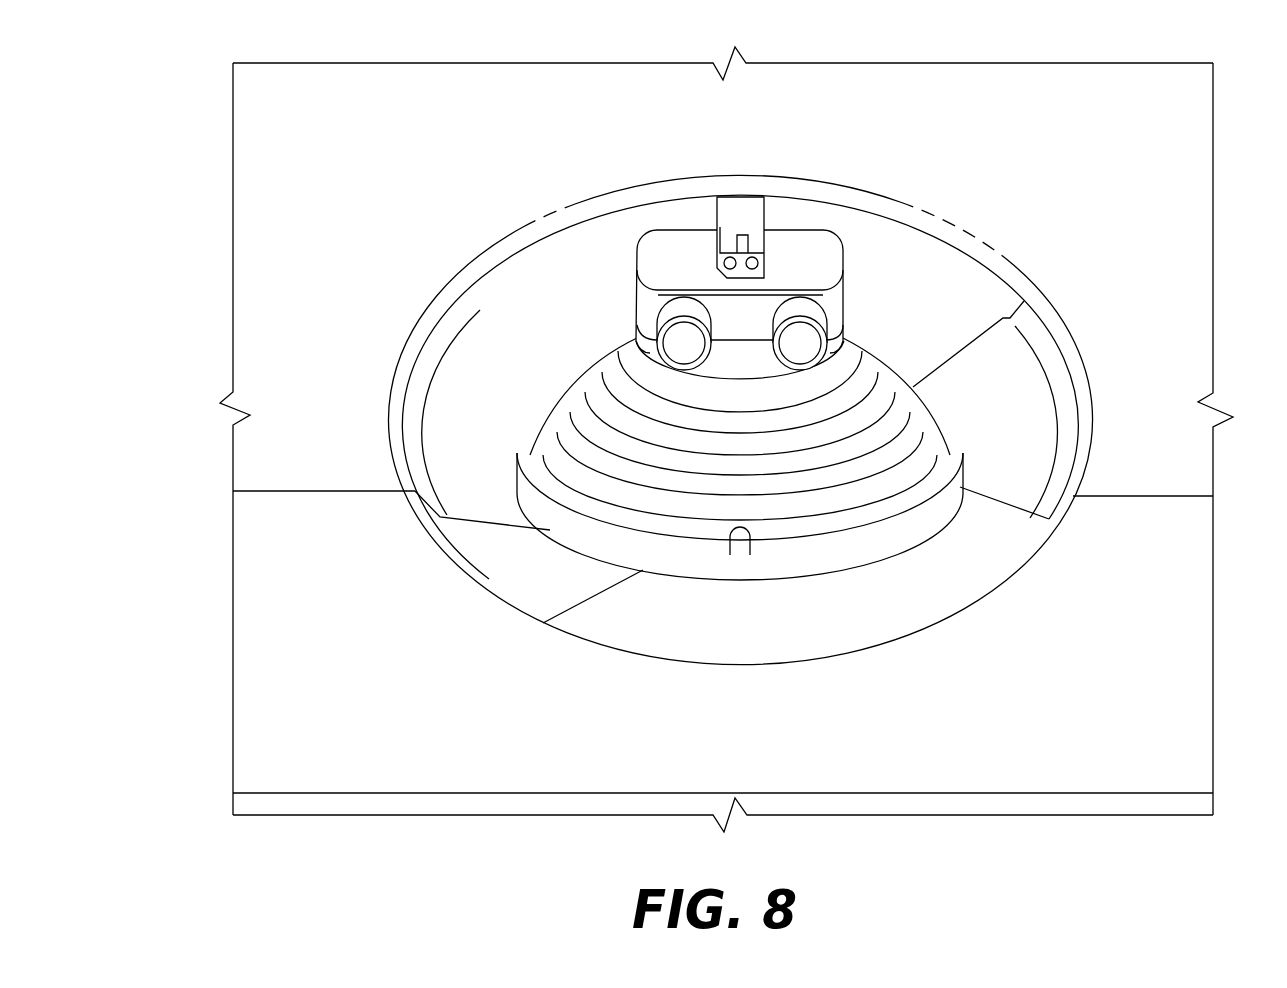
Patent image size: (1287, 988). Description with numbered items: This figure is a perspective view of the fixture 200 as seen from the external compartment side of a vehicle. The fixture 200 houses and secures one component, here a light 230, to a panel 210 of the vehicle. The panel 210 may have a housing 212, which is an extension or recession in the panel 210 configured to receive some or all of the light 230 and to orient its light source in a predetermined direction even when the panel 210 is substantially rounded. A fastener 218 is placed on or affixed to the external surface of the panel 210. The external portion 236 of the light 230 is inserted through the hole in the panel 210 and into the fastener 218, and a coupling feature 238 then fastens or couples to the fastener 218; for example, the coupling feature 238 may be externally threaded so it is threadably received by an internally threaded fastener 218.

The fixture 200 is at (160, 136).
The panel 210 is at (1077, 213).
The housing 212 is at (1033, 378).
The fastener 218 is at (915, 453).
The light 230 is at (654, 188).
The external portion 236 is at (608, 376).
The coupling feature 238 is at (582, 455).